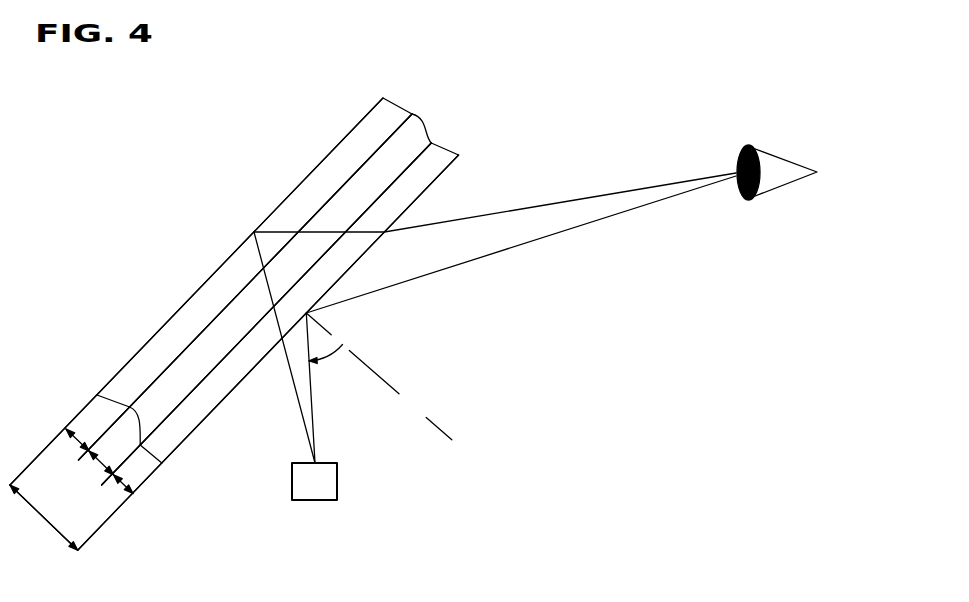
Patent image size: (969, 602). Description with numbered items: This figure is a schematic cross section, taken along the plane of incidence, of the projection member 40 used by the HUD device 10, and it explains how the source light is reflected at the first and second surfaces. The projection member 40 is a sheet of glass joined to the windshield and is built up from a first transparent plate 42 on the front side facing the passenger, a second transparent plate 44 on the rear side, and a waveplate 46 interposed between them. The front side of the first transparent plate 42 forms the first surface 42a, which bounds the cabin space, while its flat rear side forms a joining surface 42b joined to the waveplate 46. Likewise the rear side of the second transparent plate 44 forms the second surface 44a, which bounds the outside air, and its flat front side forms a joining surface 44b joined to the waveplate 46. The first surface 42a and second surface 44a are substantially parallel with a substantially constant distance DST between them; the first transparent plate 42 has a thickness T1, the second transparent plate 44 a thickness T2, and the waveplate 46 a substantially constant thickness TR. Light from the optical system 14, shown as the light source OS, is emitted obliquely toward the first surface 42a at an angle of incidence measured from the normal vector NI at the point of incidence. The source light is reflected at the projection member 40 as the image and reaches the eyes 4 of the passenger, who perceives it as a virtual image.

The eyes 4 is at (750, 145).
The HUD device 10 is at (315, 508).
The optical system 14 is at (315, 508).
The projection member 40 is at (503, 105).
The first transparent plate 42 is at (440, 147).
The first surface 42a is at (213, 411).
The joining surface 42b is at (384, 187).
The second transparent plate 44 is at (398, 106).
The second surface 44a is at (176, 313).
The joining surface 44b is at (358, 163).
The waveplate 46 is at (421, 122).
The light source OS is at (315, 500).
The normal vector NI is at (410, 403).
The thickness of the first transparent plate T1 is at (130, 493).
The thickness of the second transparent plate T2 is at (88, 451).
The thickness of the waveplate TR is at (113, 475).
The distance DST is at (39, 517).